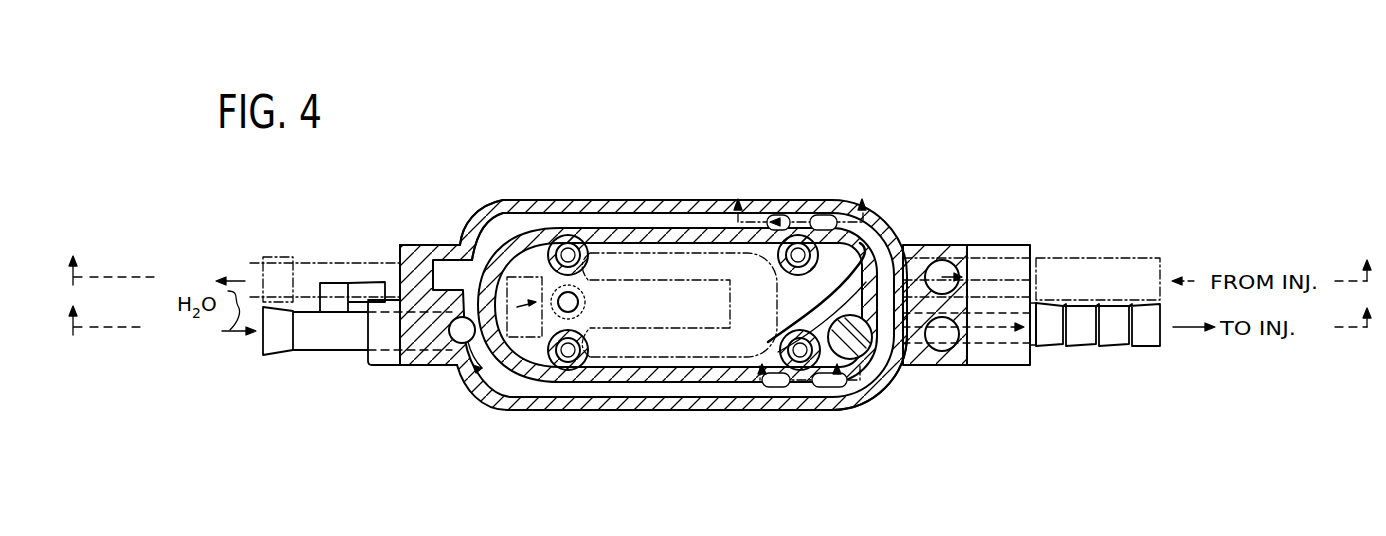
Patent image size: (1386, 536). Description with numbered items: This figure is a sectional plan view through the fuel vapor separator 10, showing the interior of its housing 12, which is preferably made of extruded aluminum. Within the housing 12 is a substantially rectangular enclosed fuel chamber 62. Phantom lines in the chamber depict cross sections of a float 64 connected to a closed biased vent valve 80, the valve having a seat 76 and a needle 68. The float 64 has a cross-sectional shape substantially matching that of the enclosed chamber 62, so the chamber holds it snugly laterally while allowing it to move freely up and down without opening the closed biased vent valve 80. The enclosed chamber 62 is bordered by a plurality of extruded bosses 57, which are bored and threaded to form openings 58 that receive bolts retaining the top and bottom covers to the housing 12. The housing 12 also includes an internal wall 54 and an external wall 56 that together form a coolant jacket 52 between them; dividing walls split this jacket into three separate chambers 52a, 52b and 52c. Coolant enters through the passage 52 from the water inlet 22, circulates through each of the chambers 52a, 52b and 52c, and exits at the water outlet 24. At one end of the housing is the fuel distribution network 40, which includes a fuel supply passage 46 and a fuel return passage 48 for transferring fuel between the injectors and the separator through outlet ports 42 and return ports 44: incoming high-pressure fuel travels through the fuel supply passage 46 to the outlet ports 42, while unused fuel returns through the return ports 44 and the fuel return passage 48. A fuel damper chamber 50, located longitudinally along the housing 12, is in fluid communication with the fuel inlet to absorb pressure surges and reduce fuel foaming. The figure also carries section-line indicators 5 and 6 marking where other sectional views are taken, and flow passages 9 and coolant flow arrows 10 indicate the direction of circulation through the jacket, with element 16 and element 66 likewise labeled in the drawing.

The section line 5- 5 is at (717, 327).
The section line 6- 6 is at (717, 275).
The fluid passages 9 is at (800, 326).
The fuel vapor separator 10 is at (457, 199).
The housing 12 is at (898, 222).
The inlet fitting 16 is at (333, 288).
The water inlet 22 is at (275, 345).
The water outlet 24 is at (283, 262).
The fuel distribution network 40 is at (1002, 245).
The outlet ports 42 is at (1138, 345).
The return ports 44 is at (1136, 268).
The fuel supply passage 46 is at (942, 352).
The fuel return passage 48 is at (942, 262).
The fuel damper chamber 50 is at (890, 390).
The coolant jacket 52 is at (455, 365).
The first coolant chamber 52a is at (590, 388).
The second coolant chamber 52b is at (862, 387).
The third coolant chamber 52c is at (503, 216).
The internal wall 54 is at (625, 237).
The external wall 56 is at (681, 205).
The extruded bosses 57 is at (597, 245).
The openings 58 is at (568, 243).
The enclosed fuel chamber 62 is at (738, 330).
The float 64 is at (783, 305).
The injector core (phantom) 66 is at (726, 305).
The needle 68 is at (598, 313).
The seat 76 is at (588, 292).
The closed biased vent valve 80 is at (524, 307).